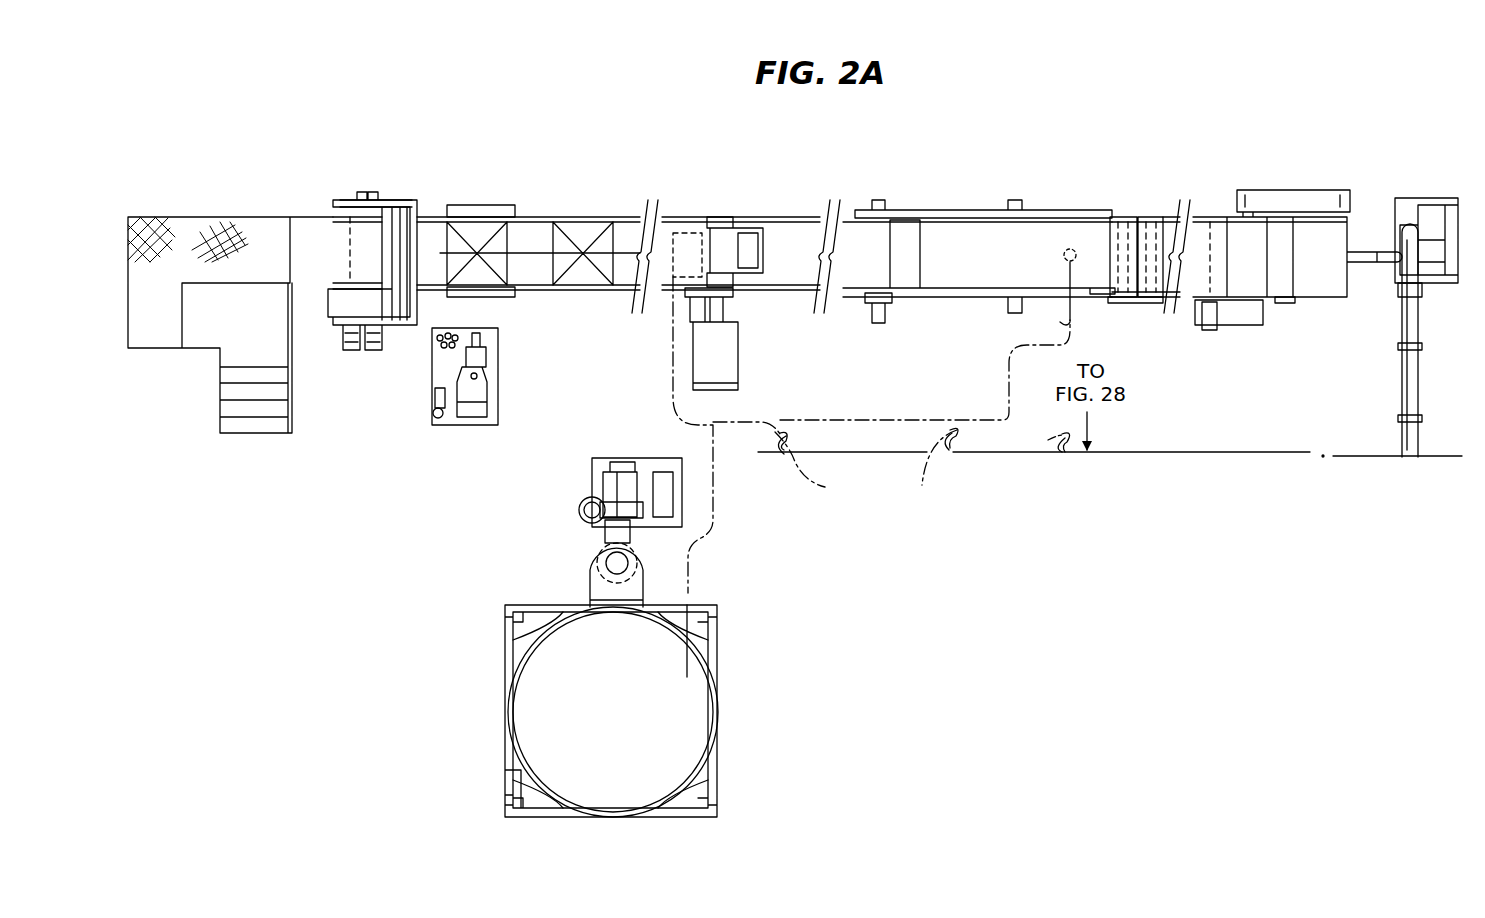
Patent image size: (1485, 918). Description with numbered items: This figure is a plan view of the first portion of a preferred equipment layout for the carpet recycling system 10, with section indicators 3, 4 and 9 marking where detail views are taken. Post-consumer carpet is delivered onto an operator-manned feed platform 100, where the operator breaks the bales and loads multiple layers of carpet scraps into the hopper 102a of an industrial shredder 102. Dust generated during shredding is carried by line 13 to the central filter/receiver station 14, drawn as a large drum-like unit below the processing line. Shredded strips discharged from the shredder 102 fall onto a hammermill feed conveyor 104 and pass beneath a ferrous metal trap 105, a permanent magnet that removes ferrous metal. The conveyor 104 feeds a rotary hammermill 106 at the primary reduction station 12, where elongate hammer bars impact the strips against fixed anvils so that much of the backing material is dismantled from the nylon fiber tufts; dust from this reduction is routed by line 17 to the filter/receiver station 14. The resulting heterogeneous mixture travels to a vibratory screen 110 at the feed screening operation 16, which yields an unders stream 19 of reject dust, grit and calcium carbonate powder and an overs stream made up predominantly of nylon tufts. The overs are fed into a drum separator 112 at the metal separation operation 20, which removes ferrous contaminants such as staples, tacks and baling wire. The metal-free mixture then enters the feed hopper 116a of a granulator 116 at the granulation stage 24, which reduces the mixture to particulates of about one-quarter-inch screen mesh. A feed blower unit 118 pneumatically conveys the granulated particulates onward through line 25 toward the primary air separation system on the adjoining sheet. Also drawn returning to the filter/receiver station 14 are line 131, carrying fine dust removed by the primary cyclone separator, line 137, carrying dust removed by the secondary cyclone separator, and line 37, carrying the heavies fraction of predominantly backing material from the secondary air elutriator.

The section line 3- 3 is at (125, 175).
The section line 4- 4 is at (1462, 227).
The section line 9- 9 is at (508, 453).
The dispensing system 10 is at (357, 365).
The primary reduction station 12 is at (732, 299).
The line 13 is at (838, 435).
The line 17 is at (677, 322).
The central filter/receiver station 14 is at (498, 677).
The feed screening operation 16 is at (979, 241).
The unders stream 19 is at (1073, 318).
The metal separation operation 20 is at (1140, 310).
The granulation stage 24 is at (1225, 332).
The line 25 is at (1418, 377).
The line 37 is at (1047, 440).
The feed platform 100 is at (275, 275).
The industrial shredder 102 is at (393, 327).
The hopper 102a is at (387, 198).
The hammermill feed conveyor 104 is at (525, 268).
The ferrous metal trap 105 is at (497, 210).
The rotary hammermill 106 is at (723, 217).
The vibratory screen 110 is at (993, 260).
The drum separator 112 is at (1132, 215).
The granulator 116 is at (1305, 269).
The feed hopper 116a is at (1293, 303).
The feed blower unit 118 is at (1437, 280).
The line 131 is at (935, 467).
The line 137 is at (822, 469).